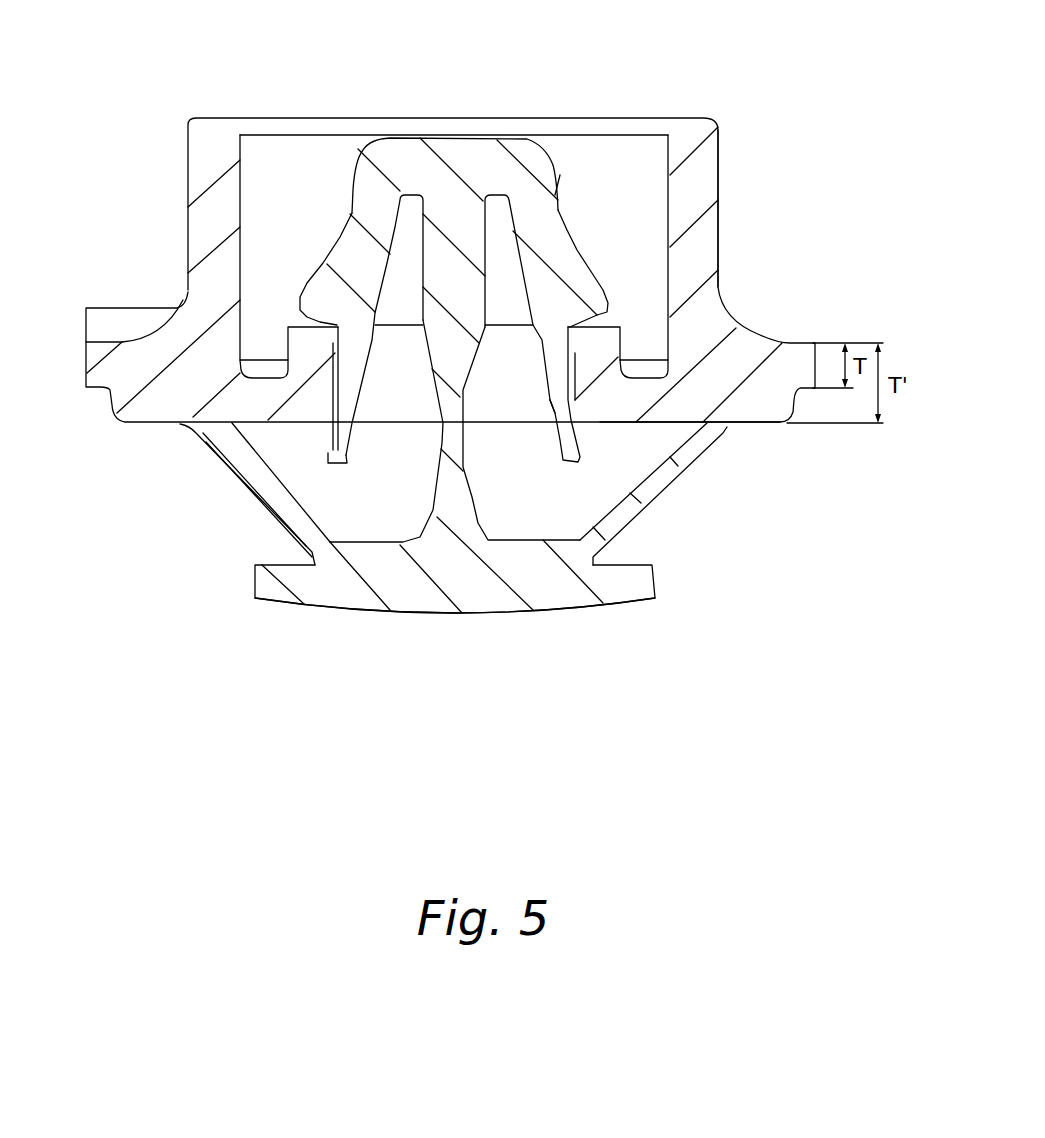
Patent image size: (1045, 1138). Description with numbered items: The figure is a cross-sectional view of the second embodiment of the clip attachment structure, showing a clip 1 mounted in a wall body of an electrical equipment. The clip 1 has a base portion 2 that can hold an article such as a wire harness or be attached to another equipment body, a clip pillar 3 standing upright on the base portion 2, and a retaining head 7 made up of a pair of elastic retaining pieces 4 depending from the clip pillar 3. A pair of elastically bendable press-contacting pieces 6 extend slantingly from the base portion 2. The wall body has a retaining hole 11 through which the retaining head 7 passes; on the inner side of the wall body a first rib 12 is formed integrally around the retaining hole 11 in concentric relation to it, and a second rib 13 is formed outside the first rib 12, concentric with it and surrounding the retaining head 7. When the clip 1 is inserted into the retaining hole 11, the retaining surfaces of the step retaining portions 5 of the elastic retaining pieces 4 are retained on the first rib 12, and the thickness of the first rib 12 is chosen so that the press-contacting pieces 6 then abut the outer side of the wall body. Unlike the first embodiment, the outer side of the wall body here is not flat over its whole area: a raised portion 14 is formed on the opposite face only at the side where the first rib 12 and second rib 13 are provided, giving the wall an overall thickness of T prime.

The clip 1 is at (298, 621).
The base portion 2 is at (378, 580).
The clip pillar 3 is at (463, 188).
The elastic retaining pieces 4 is at (312, 265).
The step retaining portions 5 is at (556, 374).
The press-contacting pieces 6 is at (250, 497).
The retaining head 7 is at (562, 188).
The retaining hole 11 is at (493, 385).
The first rib 12 is at (593, 347).
The second rib 13 is at (700, 243).
The raised portion 14 is at (772, 417).